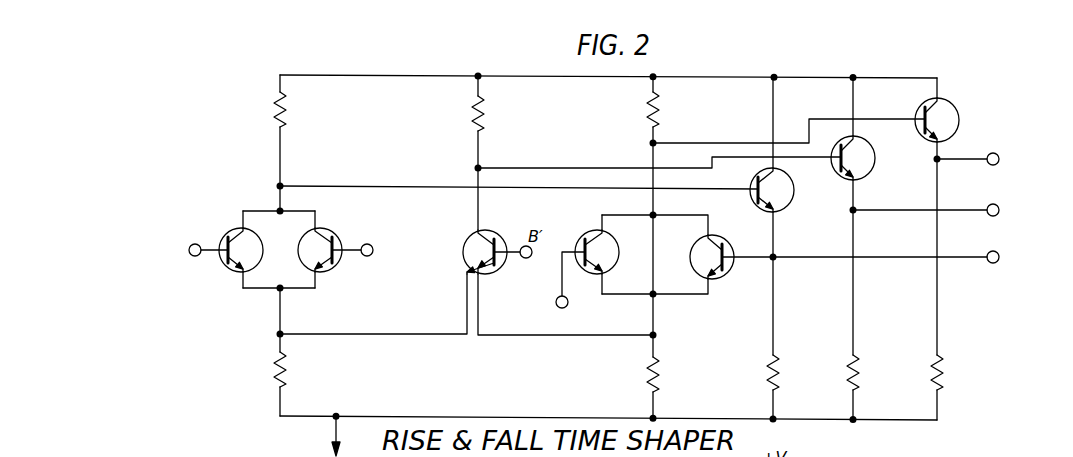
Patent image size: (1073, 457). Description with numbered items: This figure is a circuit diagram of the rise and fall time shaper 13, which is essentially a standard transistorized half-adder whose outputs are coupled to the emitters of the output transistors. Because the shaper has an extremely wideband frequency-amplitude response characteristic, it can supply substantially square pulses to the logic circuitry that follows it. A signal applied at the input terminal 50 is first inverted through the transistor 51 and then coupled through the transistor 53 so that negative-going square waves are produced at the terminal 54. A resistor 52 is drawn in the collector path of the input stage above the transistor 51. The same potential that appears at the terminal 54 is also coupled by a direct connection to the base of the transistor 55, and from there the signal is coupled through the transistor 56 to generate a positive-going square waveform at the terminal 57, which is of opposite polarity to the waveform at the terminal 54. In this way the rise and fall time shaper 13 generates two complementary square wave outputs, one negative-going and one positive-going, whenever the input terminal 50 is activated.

The rise and fall time shaper 13 is at (753, 68).
The input terminal 50 is at (190, 242).
The transistor 51 is at (228, 233).
The load resistor 52 is at (288, 113).
The transistor 53 is at (789, 204).
The terminal 54 is at (999, 260).
The transistor 55 is at (722, 275).
The transistor 56 is at (958, 103).
The terminal 57 is at (997, 152).